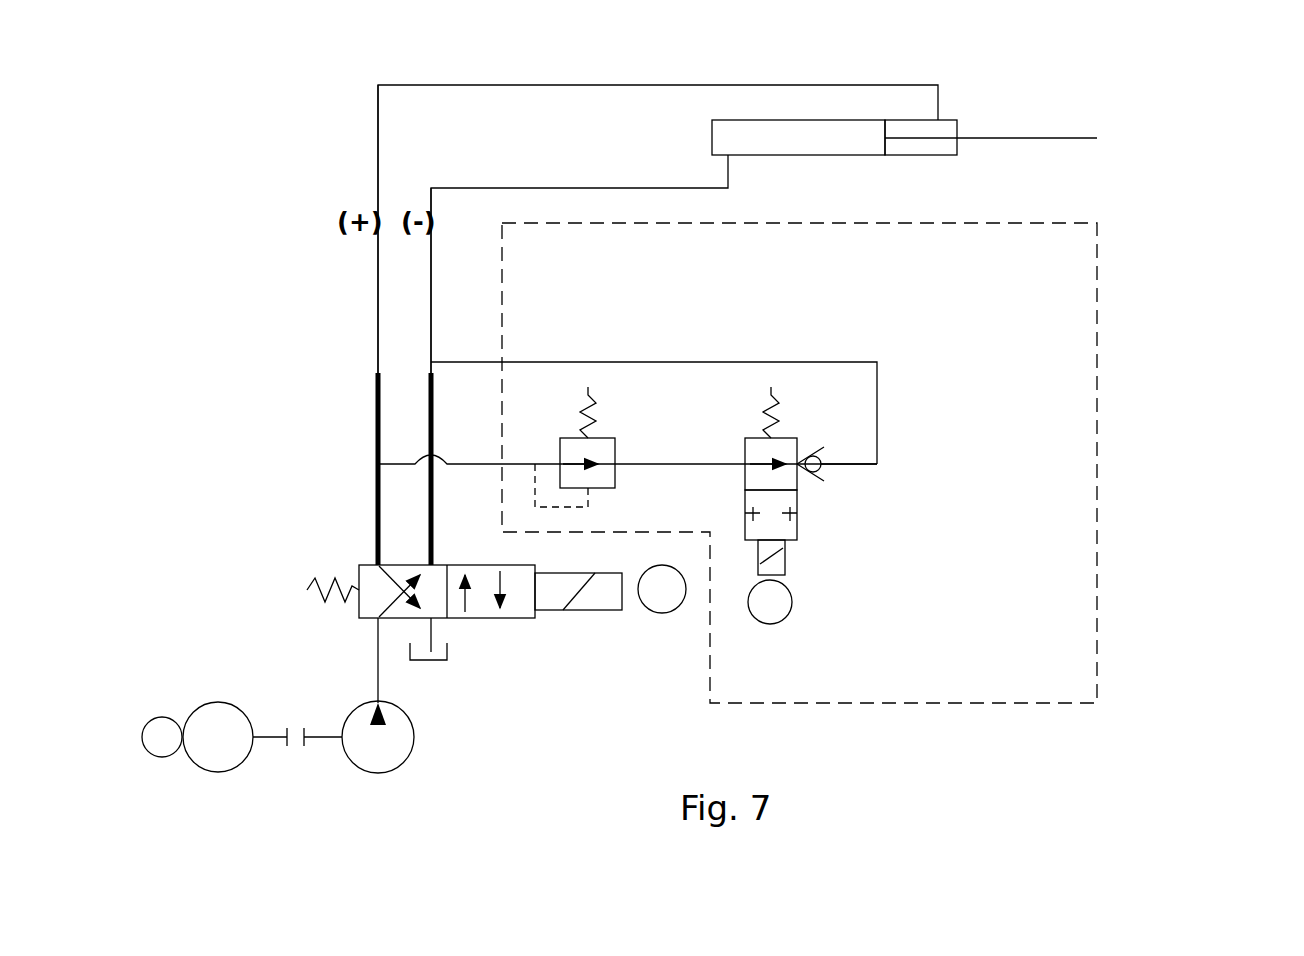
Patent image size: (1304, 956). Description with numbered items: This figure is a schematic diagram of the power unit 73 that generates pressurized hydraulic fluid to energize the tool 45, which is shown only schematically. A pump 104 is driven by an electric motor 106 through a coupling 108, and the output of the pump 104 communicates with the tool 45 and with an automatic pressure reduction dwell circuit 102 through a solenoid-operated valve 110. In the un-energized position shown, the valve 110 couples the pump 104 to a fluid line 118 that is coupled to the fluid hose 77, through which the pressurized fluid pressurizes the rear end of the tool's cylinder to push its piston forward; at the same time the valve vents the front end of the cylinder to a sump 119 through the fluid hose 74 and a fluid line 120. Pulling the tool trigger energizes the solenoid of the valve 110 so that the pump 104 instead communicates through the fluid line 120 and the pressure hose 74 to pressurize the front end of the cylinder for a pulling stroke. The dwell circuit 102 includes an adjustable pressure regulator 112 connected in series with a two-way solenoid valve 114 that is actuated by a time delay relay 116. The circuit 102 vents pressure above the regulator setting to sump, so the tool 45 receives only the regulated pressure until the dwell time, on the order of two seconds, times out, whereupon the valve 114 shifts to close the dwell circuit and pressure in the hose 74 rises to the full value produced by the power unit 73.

The tool 45 is at (712, 138).
The power unit 73 is at (170, 512).
The fluid hose 74 is at (378, 343).
The fluid hose 77 is at (431, 293).
The automatic pressure reduction dwell circuit 102 is at (1100, 370).
The pump 104 is at (410, 727).
The electric motor 106 is at (218, 702).
The coupling 108 is at (297, 755).
The solenoid-operated valve 110 is at (515, 641).
The pressure regulator 112 is at (611, 426).
The two-way solenoid valve 114 is at (810, 515).
The time delay relay 116 is at (793, 598).
The fluid line 118 is at (431, 428).
The sump 119 is at (418, 663).
The fluid line 120 is at (378, 517).